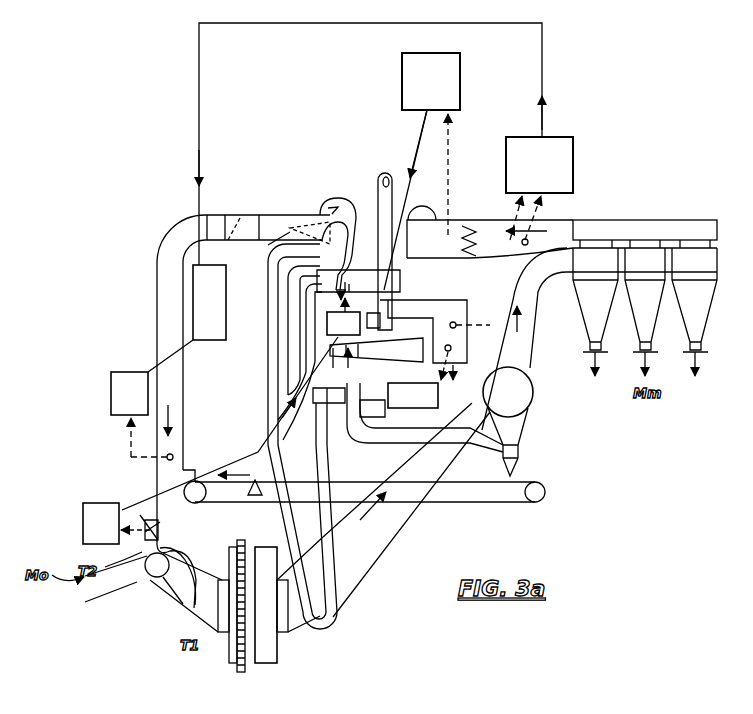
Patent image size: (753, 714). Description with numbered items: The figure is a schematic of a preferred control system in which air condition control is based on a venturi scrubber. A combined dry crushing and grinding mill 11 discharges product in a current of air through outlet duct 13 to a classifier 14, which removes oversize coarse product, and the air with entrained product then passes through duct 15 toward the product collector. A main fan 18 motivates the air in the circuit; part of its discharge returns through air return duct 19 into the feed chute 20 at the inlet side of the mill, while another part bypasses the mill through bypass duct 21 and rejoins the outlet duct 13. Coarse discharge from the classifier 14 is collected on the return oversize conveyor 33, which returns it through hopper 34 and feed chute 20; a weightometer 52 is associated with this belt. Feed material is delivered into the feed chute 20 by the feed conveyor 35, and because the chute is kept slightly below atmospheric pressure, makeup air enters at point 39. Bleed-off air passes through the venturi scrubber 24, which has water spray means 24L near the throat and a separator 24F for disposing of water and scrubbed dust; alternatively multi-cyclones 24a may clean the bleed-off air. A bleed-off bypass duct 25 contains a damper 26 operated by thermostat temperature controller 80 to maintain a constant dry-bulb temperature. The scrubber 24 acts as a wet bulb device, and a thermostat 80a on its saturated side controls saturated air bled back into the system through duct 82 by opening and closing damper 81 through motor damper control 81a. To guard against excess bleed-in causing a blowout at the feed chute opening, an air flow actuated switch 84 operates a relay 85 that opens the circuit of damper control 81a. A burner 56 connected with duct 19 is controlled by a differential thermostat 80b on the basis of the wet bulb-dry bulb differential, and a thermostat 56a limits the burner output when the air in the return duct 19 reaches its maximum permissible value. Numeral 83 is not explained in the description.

The thermostat temperature controller 80 is at (462, 74).
The differential thermostat 80b is at (539, 191).
The thermostat 80a is at (425, 417).
The main fan 18 is at (440, 210).
The header 83 is at (617, 220).
The multi-cyclones 24a is at (655, 310).
The duct 15 is at (530, 348).
The classifier 14 is at (533, 400).
The outlet duct 13 is at (410, 500).
The return oversize conveyor 33 is at (478, 492).
The air return duct 19 is at (178, 398).
The burner 56 is at (230, 255).
The thermostat 56a is at (152, 400).
The bypass duct 21 is at (272, 392).
The duct 82 is at (343, 196).
The bleed-off bypass duct 25 is at (395, 292).
The damper 26 is at (392, 300).
The damper 81 is at (345, 292).
The motor damper control 81a is at (343, 316).
The venturi scrubber 24 is at (362, 355).
The water spray means 24L is at (325, 382).
The separator 24F is at (457, 394).
The weightometer 52 is at (230, 423).
The relay 85 is at (116, 523).
The air flow actuated switch 84 is at (162, 520).
The hopper 34 is at (192, 520).
The feed chute 20 is at (205, 565).
The feed conveyor 35 is at (160, 578).
The makeup air entry point 39 is at (168, 580).
The combined dry crushing and grinding mill 11 is at (275, 540).